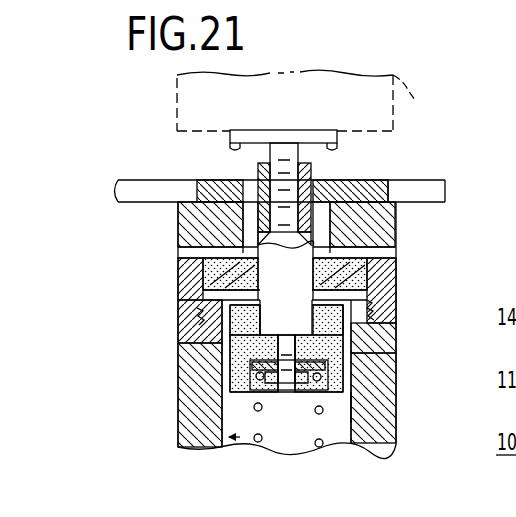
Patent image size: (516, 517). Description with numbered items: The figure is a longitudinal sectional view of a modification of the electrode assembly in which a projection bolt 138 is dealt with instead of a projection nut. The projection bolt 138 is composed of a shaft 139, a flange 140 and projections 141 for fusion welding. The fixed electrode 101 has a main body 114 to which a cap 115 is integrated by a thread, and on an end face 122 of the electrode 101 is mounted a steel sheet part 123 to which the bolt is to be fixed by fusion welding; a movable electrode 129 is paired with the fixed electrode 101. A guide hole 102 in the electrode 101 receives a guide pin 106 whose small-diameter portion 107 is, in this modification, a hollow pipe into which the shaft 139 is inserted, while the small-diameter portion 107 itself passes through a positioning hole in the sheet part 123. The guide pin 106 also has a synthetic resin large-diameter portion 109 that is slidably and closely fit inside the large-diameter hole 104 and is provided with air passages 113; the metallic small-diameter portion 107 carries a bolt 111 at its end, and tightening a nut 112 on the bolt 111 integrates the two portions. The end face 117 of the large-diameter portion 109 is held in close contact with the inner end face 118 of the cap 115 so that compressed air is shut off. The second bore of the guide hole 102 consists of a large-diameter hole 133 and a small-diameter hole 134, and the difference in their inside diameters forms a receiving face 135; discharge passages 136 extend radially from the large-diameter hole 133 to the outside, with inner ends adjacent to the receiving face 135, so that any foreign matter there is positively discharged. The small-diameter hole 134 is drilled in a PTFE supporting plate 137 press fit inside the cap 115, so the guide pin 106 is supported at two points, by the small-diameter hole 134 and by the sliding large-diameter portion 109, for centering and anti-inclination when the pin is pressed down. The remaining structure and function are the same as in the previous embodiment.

The electrode 101 is at (112, 345).
The guide hole 102 is at (240, 440).
The large-diameter hole 104 is at (351, 425).
The guide pin 106 is at (240, 172).
The small-diameter portion 107 is at (350, 213).
The large-diameter portion 109 is at (380, 365).
The bolt 111 is at (292, 393).
The nut 112 is at (270, 388).
The air passages 113 is at (398, 398).
The main body 114 is at (178, 427).
The cap 115 is at (178, 280).
The end face 117 is at (240, 298).
The inner end face 118 is at (203, 300).
The end face 122 is at (438, 180).
The steel sheet part 123 is at (455, 184).
The electrode 129 is at (418, 103).
The large-diameter hole 133 is at (245, 235).
The small-diameter hole 134 is at (270, 283).
The receiving face 135 is at (263, 247).
The discharge passages 136 is at (185, 252).
The supporting plate 137 is at (372, 278).
The projection bolt 138 is at (302, 126).
The shaft 139 is at (307, 166).
The flange 140 is at (247, 130).
The projections 141 is at (250, 147).